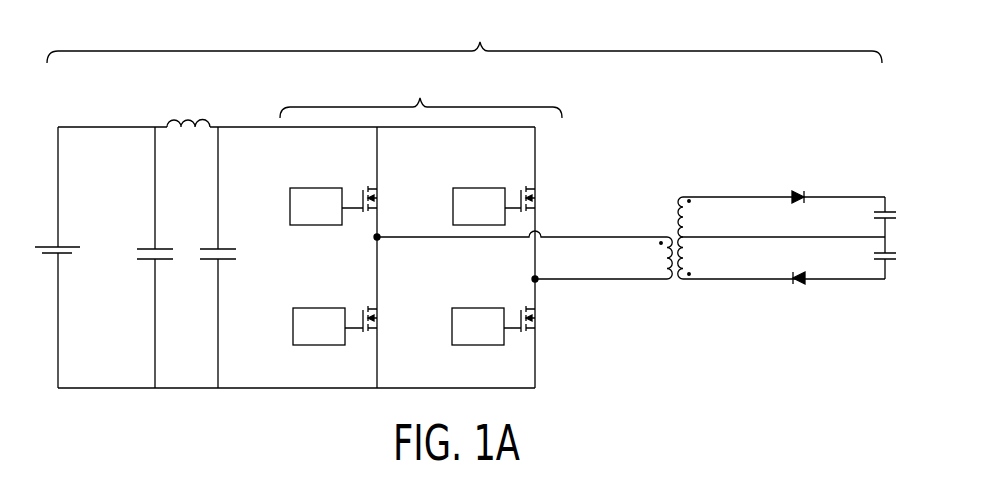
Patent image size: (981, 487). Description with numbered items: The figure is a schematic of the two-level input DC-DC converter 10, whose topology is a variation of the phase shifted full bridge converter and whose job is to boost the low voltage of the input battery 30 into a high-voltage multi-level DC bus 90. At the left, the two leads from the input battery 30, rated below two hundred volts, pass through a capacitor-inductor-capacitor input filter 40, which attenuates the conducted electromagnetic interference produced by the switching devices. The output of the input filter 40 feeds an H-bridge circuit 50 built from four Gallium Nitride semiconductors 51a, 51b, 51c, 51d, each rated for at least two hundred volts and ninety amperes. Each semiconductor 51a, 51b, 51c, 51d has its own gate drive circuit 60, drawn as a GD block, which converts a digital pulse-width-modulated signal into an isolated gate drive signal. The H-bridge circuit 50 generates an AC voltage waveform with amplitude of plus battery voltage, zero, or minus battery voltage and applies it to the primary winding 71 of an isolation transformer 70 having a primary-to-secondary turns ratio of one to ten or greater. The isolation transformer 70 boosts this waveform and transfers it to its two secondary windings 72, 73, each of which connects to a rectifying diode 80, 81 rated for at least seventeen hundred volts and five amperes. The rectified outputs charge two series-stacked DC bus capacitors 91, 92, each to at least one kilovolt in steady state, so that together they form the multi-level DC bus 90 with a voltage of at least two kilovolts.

The input DC-DC converter 10 is at (464, 34).
The input battery 30 is at (43, 247).
The input filter 40 is at (178, 115).
The H-bridge circuit 50 is at (421, 90).
The semiconductor 51a is at (378, 198).
The semiconductor 51b is at (537, 198).
The semiconductor 51c is at (378, 318).
The semiconductor 51d is at (537, 318).
The gate drive circuit 60 is at (302, 188).
The isolation transformer 70 is at (742, 194).
The primary winding 71 is at (664, 268).
The secondary winding 72 is at (688, 211).
The secondary winding 73 is at (688, 254).
The rectifying diode 80 is at (795, 186).
The rectifying diode 81 is at (800, 285).
The multi-level DC bus 90 is at (896, 216).
The DC bus capacitor 91 is at (896, 214).
The DC bus capacitor 92 is at (897, 256).